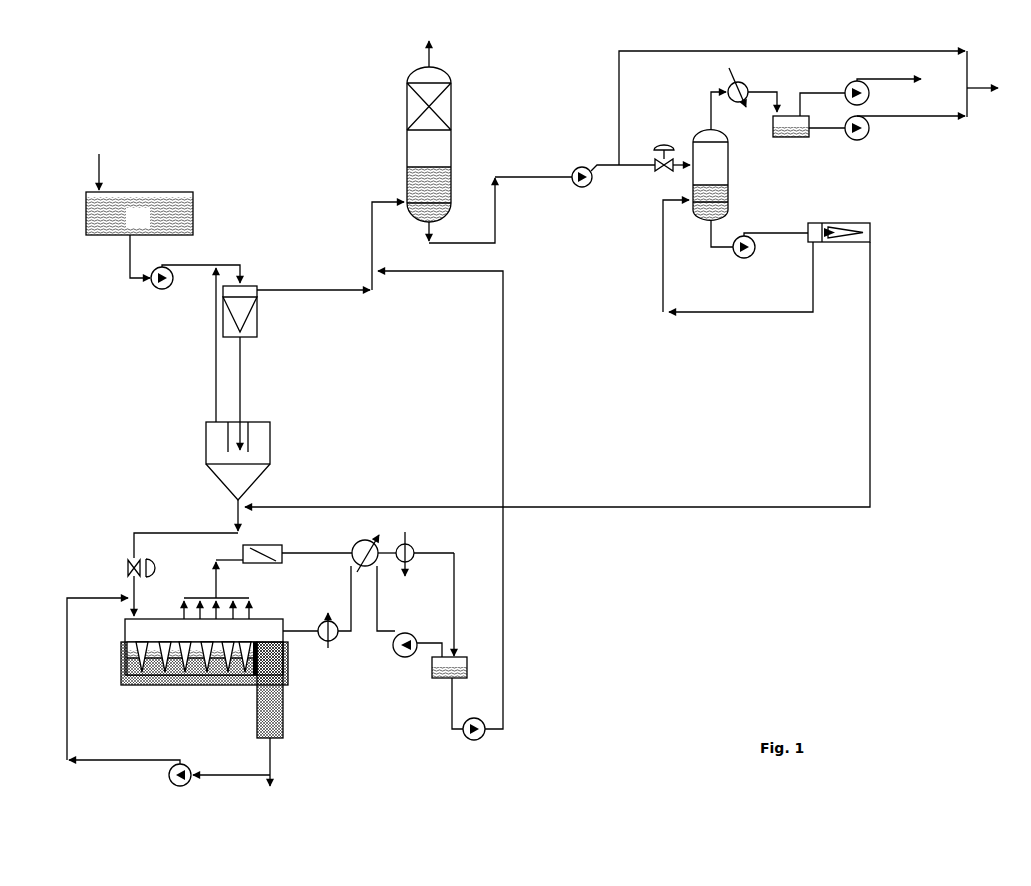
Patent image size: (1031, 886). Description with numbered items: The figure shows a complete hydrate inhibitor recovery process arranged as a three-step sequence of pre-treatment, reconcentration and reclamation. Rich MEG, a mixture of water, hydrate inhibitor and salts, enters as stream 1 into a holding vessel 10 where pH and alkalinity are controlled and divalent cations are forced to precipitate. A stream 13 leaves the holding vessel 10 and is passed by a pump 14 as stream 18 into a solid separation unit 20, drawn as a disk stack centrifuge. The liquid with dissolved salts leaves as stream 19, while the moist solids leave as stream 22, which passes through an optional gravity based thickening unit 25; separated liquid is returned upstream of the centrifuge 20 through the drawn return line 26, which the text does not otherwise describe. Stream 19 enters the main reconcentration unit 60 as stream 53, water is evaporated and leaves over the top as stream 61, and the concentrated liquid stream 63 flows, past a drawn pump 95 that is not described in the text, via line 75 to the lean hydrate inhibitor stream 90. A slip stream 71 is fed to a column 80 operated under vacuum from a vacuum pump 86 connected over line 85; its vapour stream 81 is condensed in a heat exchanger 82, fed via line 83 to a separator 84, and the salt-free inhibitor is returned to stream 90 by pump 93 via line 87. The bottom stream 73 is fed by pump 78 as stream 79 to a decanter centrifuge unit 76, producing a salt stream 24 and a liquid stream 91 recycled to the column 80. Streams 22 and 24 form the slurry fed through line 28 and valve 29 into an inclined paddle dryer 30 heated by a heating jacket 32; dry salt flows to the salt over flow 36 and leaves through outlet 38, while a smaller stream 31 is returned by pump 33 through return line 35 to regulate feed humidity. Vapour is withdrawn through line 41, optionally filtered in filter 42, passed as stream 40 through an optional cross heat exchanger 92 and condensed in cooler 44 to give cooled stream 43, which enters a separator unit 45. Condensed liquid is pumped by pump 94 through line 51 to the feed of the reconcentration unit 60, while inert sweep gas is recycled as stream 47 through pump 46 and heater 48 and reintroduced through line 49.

The rich MEG stream 1 is at (99, 163).
The holding vessel 10 is at (139, 213).
The stream from holding vessel 13 is at (130, 256).
The pump 14 is at (158, 284).
The stream into solid separation unit 18 is at (202, 264).
The liquid stream with dissolved salts 19 is at (313, 281).
The solid separation unit 20 is at (232, 321).
The stream comprising solid salt particles 22 is at (250, 393).
The stream comprising salt particles 24 is at (557, 374).
The gravity based thickening unit 25 is at (204, 466).
The return line 26 is at (206, 345).
The line 28 is at (186, 536).
The valve 29 is at (131, 587).
The paddle dryer 30 is at (137, 634).
The stream of dry salt particles 31 is at (231, 765).
The heating jacket 32 is at (123, 662).
The pump 33 is at (180, 764).
The return line 35 is at (113, 681).
The salt over flow 36 is at (272, 668).
The outlet 38 is at (265, 774).
The stream downstream filter 40 is at (293, 548).
The line 41 is at (216, 589).
The filter 42 is at (262, 544).
The cooled stream 43 is at (463, 604).
The cooler 44 is at (425, 552).
The separator unit 45 is at (460, 693).
The pump 46 is at (399, 652).
The stream 47 is at (429, 641).
The heater 48 is at (334, 610).
The line 49 is at (300, 621).
The line 51 is at (453, 500).
The stream 53 is at (388, 246).
The main reconcentration unit 60 is at (429, 144).
The stream 61 is at (439, 50).
The liquid stream 63 is at (500, 210).
The slip stream 71 is at (640, 158).
The bottom stream 73 is at (712, 233).
The line 75 is at (783, 108).
The centrifuge unit 76 is at (839, 223).
The pump 78 is at (744, 259).
The stream 79 is at (776, 225).
The column 80 is at (710, 175).
The vapour stream 81 is at (708, 111).
The heat exchanger 82 is at (745, 83).
The line 83 is at (771, 95).
The separator 84 is at (781, 126).
The line 85 is at (860, 97).
The vacuum pump 86 is at (867, 93).
The line 87 is at (827, 138).
The lean hydrate inhibitor stream 90 is at (996, 88).
The liquid stream 91 is at (738, 265).
The cross heat exchanger 92 is at (368, 578).
The pump 93 is at (905, 134).
The pump 94 is at (474, 741).
The transfer pump 95 is at (581, 188).